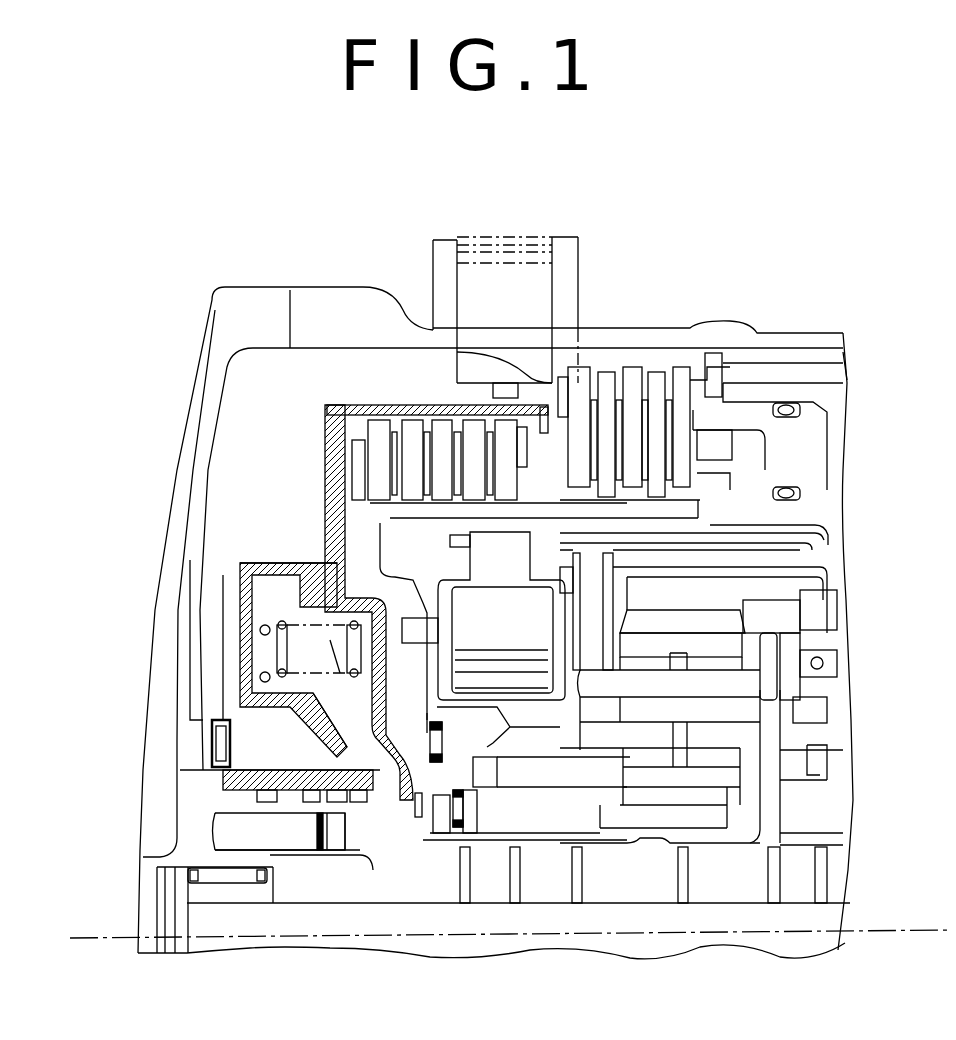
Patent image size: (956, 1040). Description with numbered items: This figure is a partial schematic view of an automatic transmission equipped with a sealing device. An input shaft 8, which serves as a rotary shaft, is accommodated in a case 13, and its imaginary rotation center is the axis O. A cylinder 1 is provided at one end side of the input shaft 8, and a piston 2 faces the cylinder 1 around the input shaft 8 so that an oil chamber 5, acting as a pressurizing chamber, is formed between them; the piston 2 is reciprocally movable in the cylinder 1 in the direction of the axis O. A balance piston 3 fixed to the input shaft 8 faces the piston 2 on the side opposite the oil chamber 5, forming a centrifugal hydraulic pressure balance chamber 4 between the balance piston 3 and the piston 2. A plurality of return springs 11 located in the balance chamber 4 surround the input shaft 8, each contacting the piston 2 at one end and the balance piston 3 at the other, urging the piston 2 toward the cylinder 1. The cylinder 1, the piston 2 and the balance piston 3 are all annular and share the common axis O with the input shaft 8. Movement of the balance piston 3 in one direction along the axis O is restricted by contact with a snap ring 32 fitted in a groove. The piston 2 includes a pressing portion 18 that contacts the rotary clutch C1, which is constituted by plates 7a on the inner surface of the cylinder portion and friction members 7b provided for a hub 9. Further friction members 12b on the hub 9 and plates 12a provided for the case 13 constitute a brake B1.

The cylinder 1 is at (237, 570).
The piston 2 is at (248, 677).
The balance piston 3 is at (350, 703).
The centrifugal hydraulic pressure balance chamber 4 is at (233, 740).
The oil chamber 5 is at (242, 582).
The plates 7a is at (378, 433).
The friction members 7b is at (397, 470).
The input shaft 8 is at (346, 950).
The hub 9 is at (300, 527).
The return springs 11 is at (280, 653).
The plates 12a is at (578, 373).
The friction members 12b is at (642, 407).
The case 13 is at (758, 345).
The pressing portion 18 is at (357, 450).
The snap ring 32 is at (418, 817).
The rotary clutch C1 is at (504, 348).
The brake B1 is at (645, 356).
The axis O is at (813, 932).